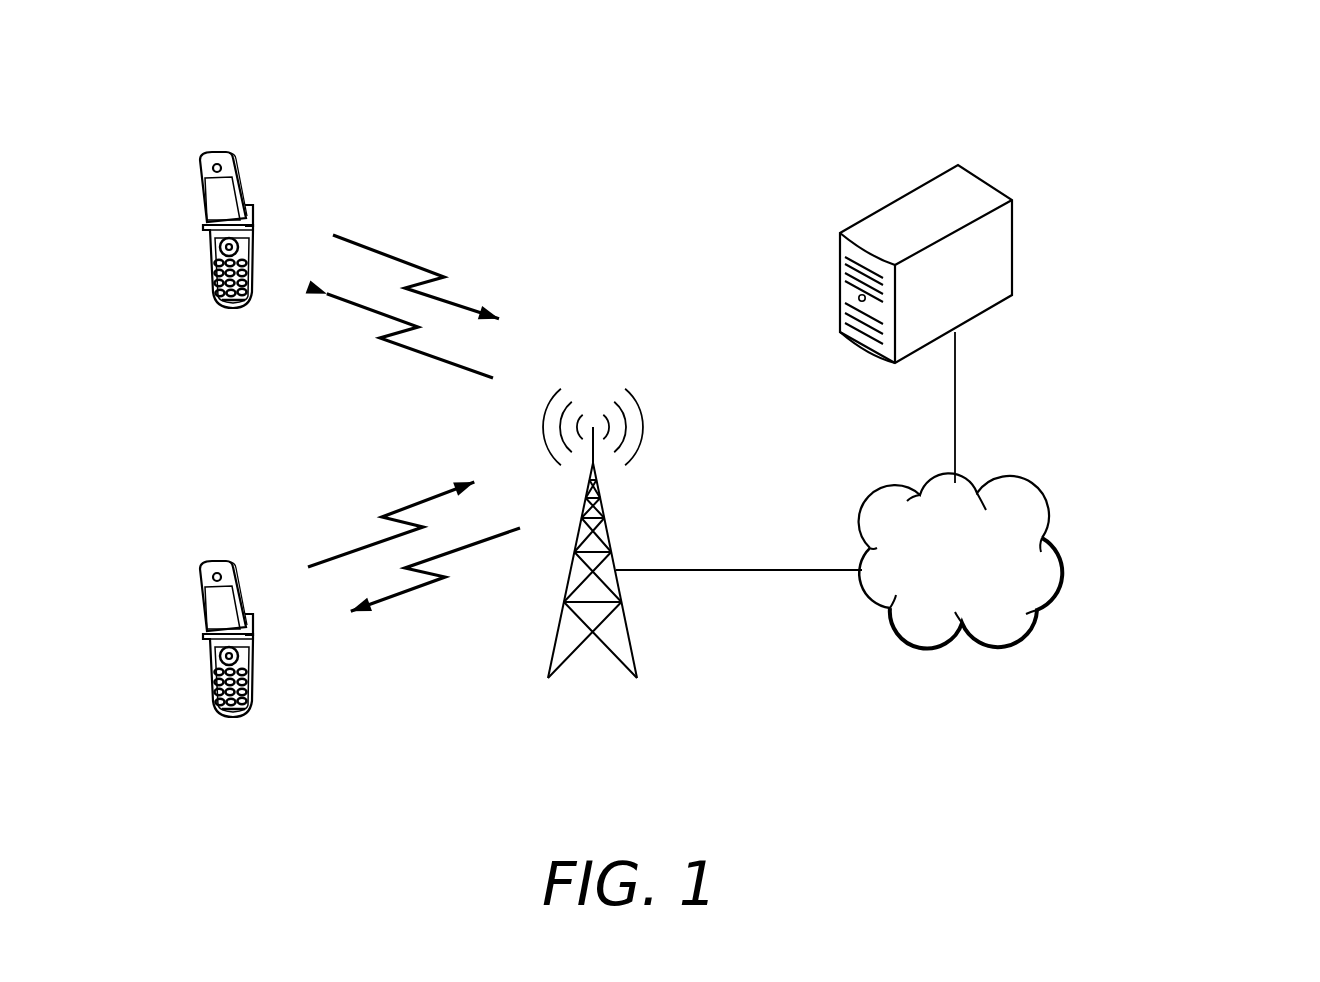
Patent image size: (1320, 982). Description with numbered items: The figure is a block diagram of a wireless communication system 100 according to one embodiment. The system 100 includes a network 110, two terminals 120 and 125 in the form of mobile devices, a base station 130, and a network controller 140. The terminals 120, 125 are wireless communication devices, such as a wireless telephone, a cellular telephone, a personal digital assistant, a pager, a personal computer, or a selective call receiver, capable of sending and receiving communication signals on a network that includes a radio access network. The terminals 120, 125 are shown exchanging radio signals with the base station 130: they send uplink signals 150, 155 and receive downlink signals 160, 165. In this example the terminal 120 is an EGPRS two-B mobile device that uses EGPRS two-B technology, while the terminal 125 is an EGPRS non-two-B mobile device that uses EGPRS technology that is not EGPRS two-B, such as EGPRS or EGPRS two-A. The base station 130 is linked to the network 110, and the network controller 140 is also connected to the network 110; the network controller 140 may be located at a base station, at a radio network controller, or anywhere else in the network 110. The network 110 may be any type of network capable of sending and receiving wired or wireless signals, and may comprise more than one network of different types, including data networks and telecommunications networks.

The system 100 is at (1230, 90).
The network 110 is at (1025, 495).
The terminal 120 is at (212, 271).
The terminal 125 is at (208, 680).
The base station 130 is at (610, 525).
The network controller 140 is at (985, 181).
The uplink signal 150 is at (392, 256).
The uplink signal 155 is at (348, 553).
The downlink signal 160 is at (445, 360).
The downlink signal 165 is at (387, 598).